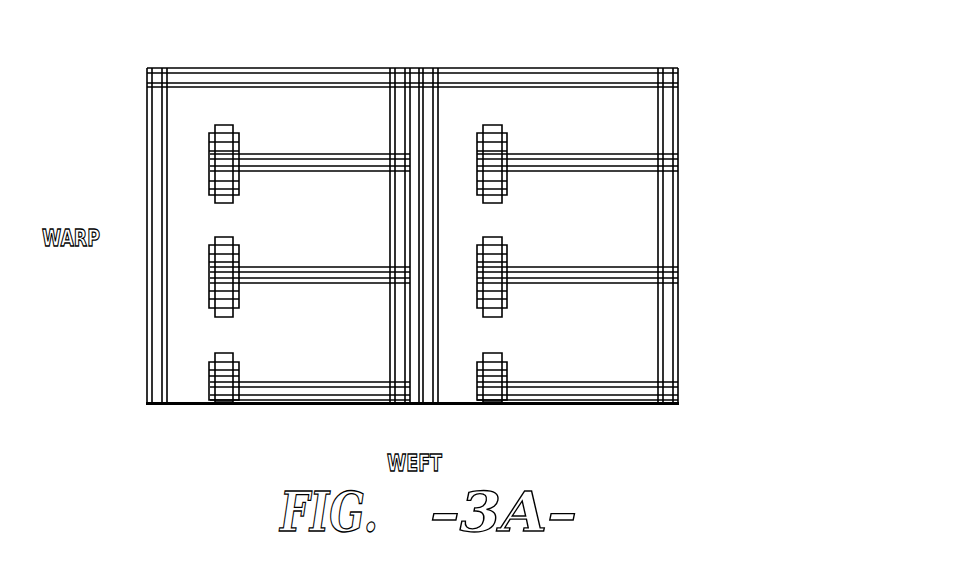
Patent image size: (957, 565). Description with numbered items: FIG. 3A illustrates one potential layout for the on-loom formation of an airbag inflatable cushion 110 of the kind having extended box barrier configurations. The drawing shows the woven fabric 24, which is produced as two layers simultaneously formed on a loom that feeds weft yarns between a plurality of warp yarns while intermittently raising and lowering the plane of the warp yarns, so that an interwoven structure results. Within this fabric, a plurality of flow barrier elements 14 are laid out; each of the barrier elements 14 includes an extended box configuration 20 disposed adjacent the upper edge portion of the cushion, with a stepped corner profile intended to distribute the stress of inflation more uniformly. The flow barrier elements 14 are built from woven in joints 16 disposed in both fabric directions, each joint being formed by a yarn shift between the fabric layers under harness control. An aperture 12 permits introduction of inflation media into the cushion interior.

The airbag inflatable cushion 110 is at (722, 64).
The aperture 12 is at (188, 391).
The flow barrier elements 14 is at (246, 153).
The woven in joints 16 is at (292, 390).
The extended box configuration 20 is at (209, 150).
The woven fabric 24 is at (331, 344).